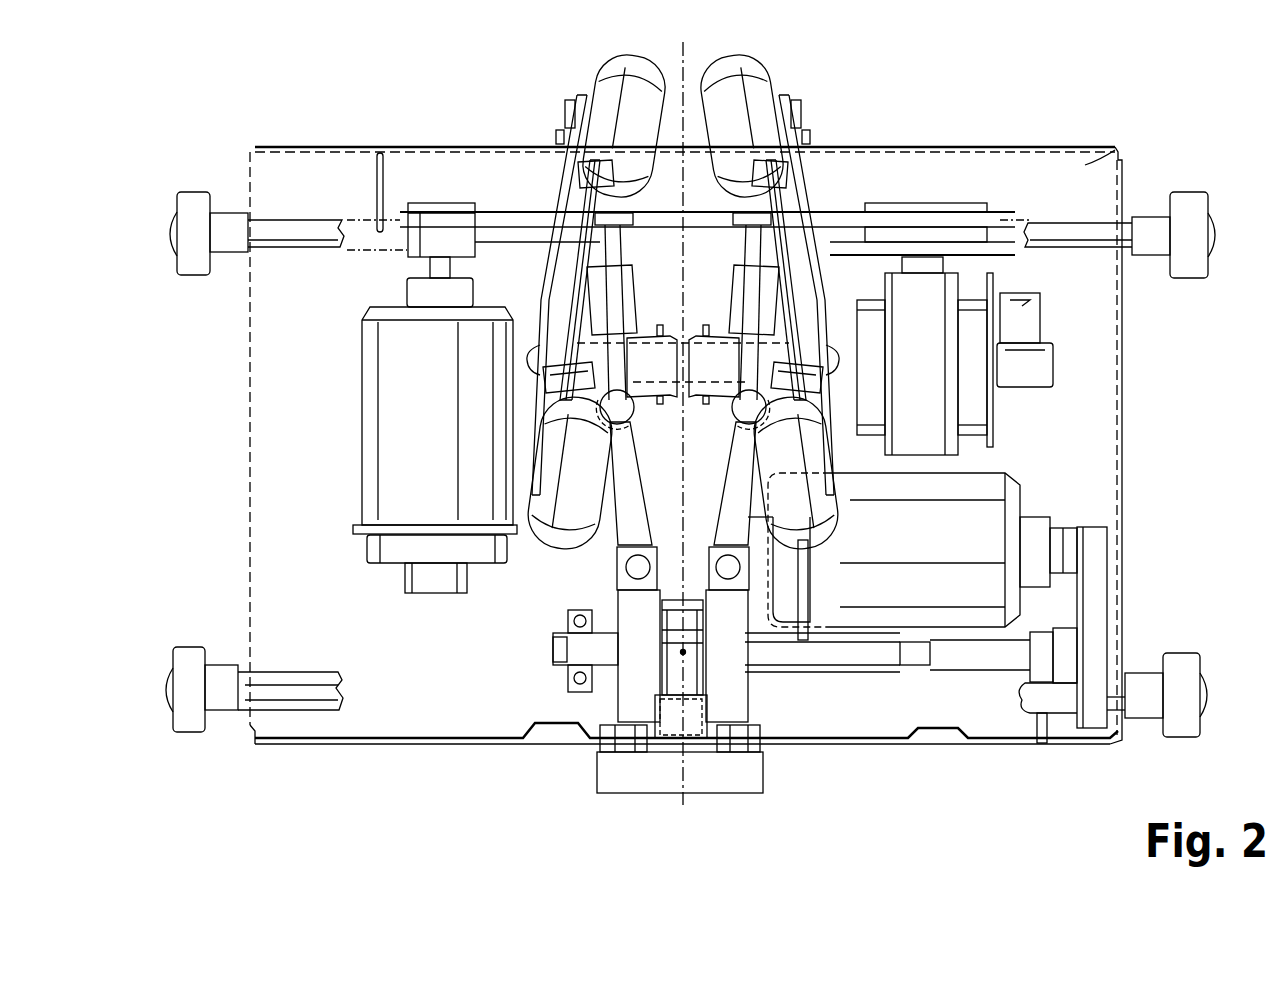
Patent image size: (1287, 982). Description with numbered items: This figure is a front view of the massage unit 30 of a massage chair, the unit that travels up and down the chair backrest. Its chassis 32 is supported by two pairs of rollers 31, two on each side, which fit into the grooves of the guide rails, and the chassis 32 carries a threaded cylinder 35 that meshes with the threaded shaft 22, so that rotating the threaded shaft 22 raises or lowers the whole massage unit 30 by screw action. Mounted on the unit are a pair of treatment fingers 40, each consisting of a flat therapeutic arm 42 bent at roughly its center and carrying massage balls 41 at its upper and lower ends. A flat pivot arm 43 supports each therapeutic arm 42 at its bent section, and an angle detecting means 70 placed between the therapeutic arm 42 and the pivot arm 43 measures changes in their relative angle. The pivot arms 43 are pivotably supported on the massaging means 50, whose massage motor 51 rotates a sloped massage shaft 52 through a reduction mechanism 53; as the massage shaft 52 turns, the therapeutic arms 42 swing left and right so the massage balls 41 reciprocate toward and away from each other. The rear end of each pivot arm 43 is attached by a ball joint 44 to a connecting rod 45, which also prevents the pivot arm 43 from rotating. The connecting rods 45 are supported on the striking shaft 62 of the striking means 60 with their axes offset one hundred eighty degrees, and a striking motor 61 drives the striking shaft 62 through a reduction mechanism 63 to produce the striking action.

The threaded shaft 22 is at (690, 760).
The massage unit 30 is at (1012, 126).
The rollers 31 is at (193, 196).
The chassis 32 is at (1090, 163).
The threaded cylinder 35 is at (621, 777).
The treatment fingers 40 is at (540, 113).
The massage balls 41 is at (608, 76).
The therapeutic arm 42 is at (580, 168).
The pivot arm 43 is at (552, 333).
The ball joint 44 is at (632, 420).
The connecting rod 45 is at (610, 555).
The massaging means 50 is at (980, 370).
The massage motor 51 is at (368, 412).
The massage shaft 52 is at (1043, 363).
The reduction mechanism 53 is at (920, 427).
The striking means 60 is at (963, 580).
The striking motor 61 is at (995, 518).
The striking shaft 62 is at (833, 652).
The reduction mechanism 63 is at (1095, 630).
The angle detecting means 70 is at (655, 300).